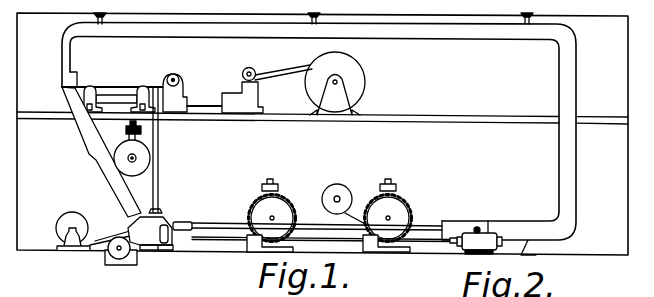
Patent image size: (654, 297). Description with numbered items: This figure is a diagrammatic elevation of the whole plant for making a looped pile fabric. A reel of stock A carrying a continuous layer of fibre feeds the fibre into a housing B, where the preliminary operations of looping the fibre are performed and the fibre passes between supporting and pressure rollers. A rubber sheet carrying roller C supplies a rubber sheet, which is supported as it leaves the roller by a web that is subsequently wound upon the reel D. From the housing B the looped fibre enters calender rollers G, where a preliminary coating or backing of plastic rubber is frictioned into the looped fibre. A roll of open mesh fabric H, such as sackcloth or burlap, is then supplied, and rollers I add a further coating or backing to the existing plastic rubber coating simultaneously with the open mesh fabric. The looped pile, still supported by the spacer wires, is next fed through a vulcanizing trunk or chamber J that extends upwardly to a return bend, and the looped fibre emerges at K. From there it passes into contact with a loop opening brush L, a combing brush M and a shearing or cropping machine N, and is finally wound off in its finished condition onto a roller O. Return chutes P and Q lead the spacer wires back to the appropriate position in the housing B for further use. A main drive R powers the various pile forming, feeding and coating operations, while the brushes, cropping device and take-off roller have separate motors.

The emergence point of looped fibre K is at (63, 52).
The loop opening brush L is at (110, 93).
The combing brush M is at (172, 78).
The shearing or cropping machine N is at (254, 72).
The roller O is at (346, 68).
The return chute P is at (82, 129).
The reel of stock A is at (143, 145).
The return chute Q is at (158, 182).
The housing B is at (168, 213).
The rubber sheet carrying roller C is at (68, 215).
The reel D is at (119, 238).
The calender rollers G is at (295, 213).
The roll of open mesh fabric H is at (350, 191).
The rollers I is at (399, 203).
The vulcanizing trunk or chamber J is at (470, 228).
The main drive R is at (478, 242).